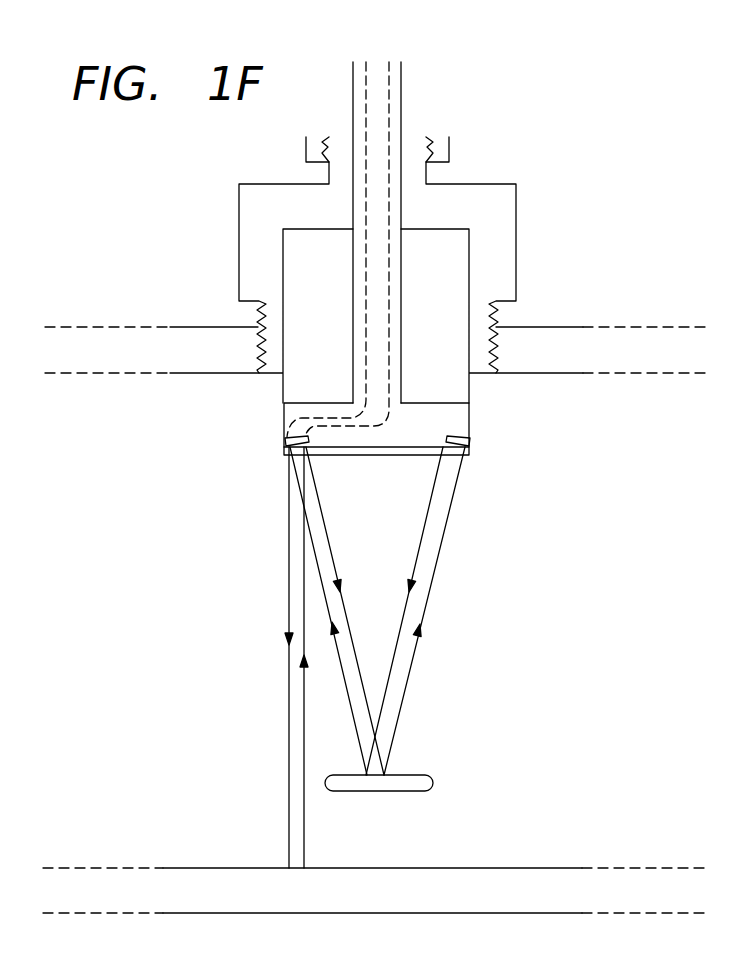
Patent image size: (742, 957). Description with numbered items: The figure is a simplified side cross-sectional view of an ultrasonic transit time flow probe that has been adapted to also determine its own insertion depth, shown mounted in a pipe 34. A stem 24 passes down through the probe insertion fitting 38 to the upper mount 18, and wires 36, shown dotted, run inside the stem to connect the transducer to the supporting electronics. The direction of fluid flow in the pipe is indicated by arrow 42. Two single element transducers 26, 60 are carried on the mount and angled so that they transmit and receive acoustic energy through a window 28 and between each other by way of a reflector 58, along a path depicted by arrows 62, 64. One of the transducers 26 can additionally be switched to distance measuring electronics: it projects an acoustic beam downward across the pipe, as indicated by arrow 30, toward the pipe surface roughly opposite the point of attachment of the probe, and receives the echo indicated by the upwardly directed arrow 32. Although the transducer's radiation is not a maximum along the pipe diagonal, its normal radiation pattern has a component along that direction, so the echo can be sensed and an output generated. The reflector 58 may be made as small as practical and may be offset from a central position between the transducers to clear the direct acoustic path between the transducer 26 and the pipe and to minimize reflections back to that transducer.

The upper mount 18 is at (284, 409).
The stem 24 is at (402, 77).
The acoustic transducer 26 is at (285, 442).
The protective window 28 is at (407, 455).
The arrow 30 is at (288, 817).
The upwardly directed arrow 32 is at (304, 818).
The pipe 34 is at (498, 868).
The wires 36 is at (390, 118).
The probe insertion fitting 38 is at (239, 250).
The arrow 42 is at (157, 620).
The reflector 58 is at (412, 775).
The single element transducer 60 is at (460, 440).
The arrow 62 is at (436, 580).
The arrow 64 is at (422, 552).